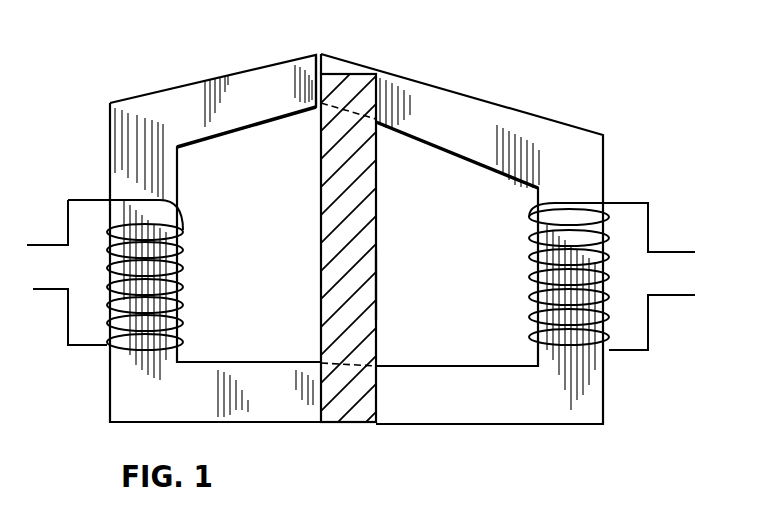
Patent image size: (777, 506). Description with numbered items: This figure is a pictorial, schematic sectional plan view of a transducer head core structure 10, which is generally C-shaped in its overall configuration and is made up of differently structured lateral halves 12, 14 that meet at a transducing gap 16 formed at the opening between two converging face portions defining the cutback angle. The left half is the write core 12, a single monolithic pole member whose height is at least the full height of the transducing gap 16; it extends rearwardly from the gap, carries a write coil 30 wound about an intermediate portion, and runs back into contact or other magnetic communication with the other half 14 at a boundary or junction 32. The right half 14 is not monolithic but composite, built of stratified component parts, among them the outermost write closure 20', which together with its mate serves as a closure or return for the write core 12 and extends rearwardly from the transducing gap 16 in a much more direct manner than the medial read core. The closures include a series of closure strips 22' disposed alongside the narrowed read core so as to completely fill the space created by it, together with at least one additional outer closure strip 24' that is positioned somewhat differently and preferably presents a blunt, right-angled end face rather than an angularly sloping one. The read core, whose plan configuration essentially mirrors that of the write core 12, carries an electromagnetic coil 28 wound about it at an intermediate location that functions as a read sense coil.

The transducer head core structure 10 is at (338, 33).
The write core 12 is at (183, 77).
The composite half of the core structure 14 is at (505, 79).
The transducing gap 16 is at (318, 72).
The write closure 20' is at (354, 256).
The closure strip 22' is at (364, 78).
The outer closure strip 24' is at (394, 285).
The electromagnetic coil 28 is at (648, 237).
The write coil 30 is at (68, 228).
The junction 32 is at (320, 400).